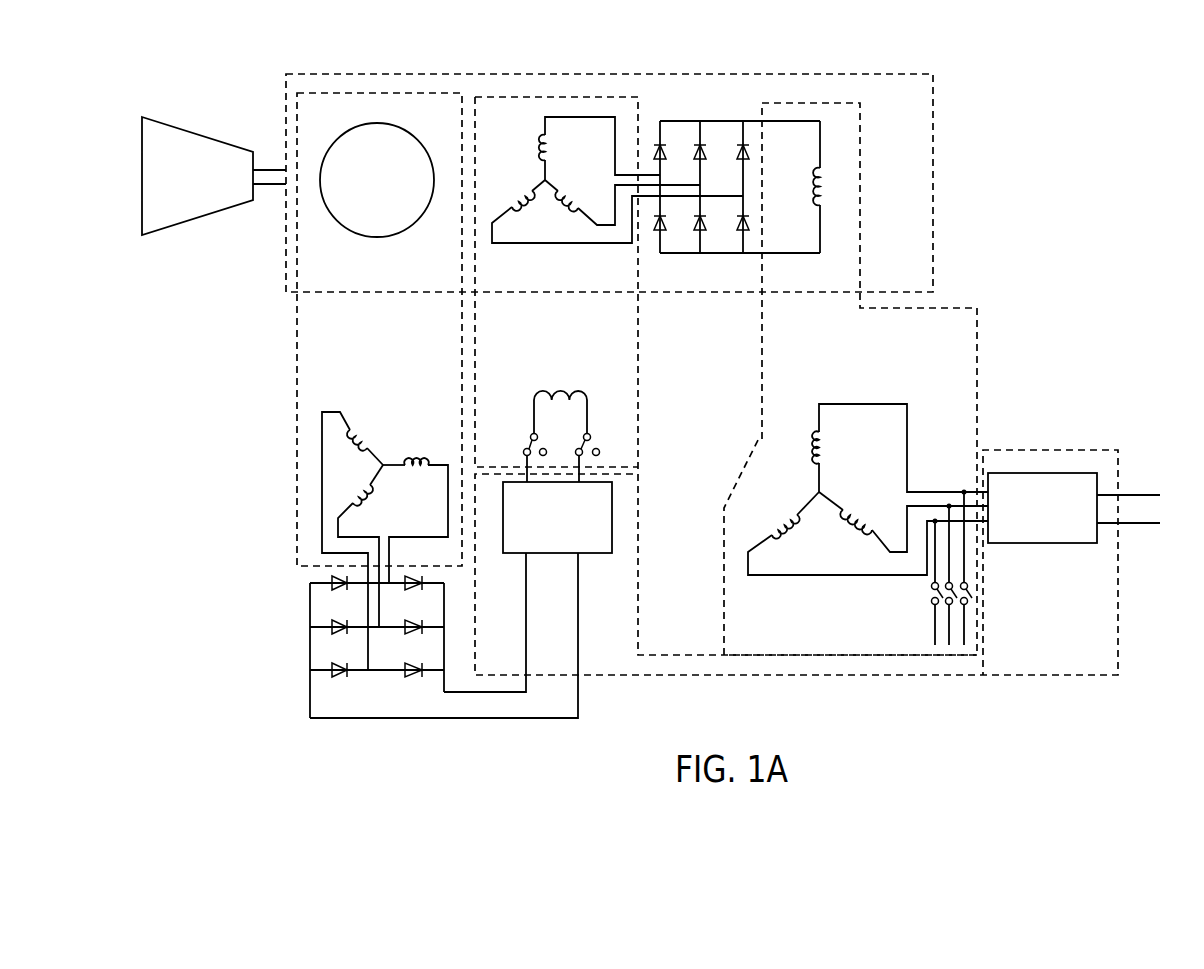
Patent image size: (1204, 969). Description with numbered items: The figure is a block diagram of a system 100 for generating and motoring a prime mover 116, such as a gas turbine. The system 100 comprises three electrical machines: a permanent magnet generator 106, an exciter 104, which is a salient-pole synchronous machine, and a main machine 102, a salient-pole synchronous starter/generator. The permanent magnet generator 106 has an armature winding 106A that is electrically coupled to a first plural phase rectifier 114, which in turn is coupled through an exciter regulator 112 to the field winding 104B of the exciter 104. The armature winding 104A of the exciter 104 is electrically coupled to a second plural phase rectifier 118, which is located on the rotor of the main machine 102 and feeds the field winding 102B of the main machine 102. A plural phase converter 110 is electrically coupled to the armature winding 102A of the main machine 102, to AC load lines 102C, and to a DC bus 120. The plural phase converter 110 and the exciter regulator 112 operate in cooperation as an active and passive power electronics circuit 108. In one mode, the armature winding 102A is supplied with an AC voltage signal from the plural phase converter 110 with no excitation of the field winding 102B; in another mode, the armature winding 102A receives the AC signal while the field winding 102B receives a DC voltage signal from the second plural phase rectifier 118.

The system 100 is at (1078, 76).
The main machine 102 is at (862, 190).
The armature winding 102A is at (800, 483).
The field winding 102B is at (803, 190).
The AC load lines 102C is at (922, 623).
The exciter 104 is at (641, 350).
The armature winding 104A is at (522, 172).
The field winding 104B is at (522, 392).
The permanent magnet generator 106 is at (295, 412).
The armature winding 106A is at (377, 433).
The active and passive power electronics circuit 108 is at (606, 676).
The plural phase converter 110 is at (1045, 545).
The exciter regulator 112 is at (560, 555).
The first plural phase rectifier 114 is at (298, 605).
The prime mover 116 is at (200, 132).
The second plural phase rectifier 118 is at (698, 120).
The DC bus 120 is at (1137, 542).